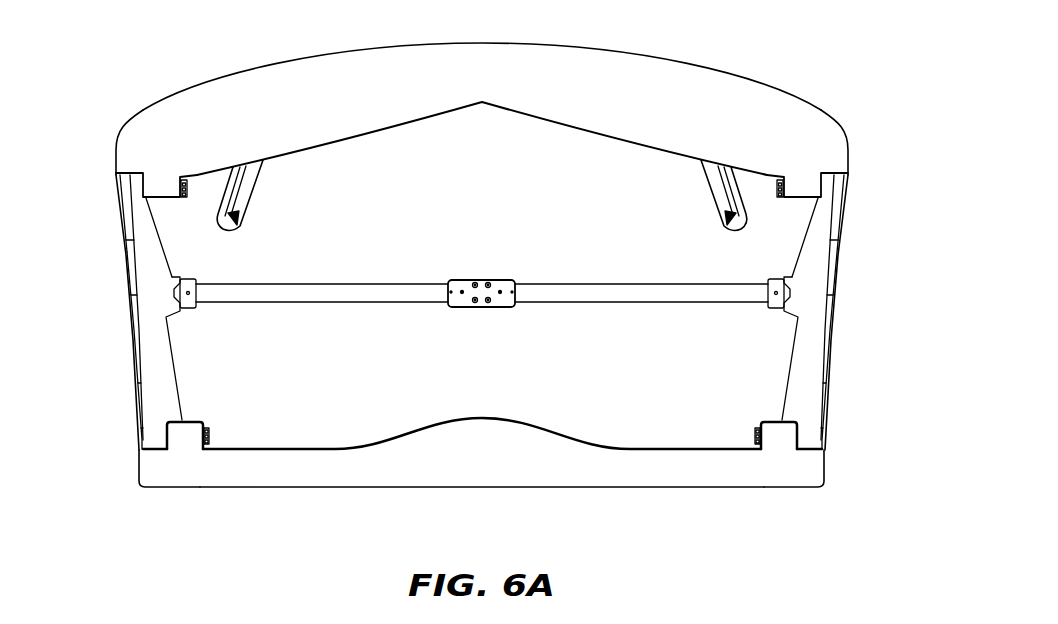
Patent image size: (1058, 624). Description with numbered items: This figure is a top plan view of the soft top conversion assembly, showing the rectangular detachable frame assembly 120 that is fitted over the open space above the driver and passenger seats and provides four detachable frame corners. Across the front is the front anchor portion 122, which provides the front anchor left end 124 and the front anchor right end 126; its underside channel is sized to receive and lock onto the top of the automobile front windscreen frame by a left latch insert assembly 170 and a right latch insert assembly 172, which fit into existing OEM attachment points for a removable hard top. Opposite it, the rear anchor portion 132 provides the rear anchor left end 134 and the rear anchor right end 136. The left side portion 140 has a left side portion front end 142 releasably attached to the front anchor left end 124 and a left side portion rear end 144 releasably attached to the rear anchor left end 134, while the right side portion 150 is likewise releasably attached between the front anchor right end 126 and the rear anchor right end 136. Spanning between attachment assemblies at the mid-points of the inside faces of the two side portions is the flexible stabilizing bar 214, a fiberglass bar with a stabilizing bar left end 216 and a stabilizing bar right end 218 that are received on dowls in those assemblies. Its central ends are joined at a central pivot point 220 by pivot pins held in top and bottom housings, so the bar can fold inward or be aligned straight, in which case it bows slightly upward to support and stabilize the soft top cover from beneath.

The detachable frame assembly 120 is at (786, 73).
The front anchor portion 122 is at (241, 86).
The front anchor left end 124 is at (145, 121).
The front anchor right end 126 is at (820, 150).
The rear anchor portion 132 is at (332, 483).
The rear anchor left end 134 is at (187, 468).
The rear anchor right end 136 is at (780, 477).
The left side portion 140 is at (152, 360).
The left side portion front end 142 is at (133, 186).
The left side portion rear end 144 is at (155, 435).
The right side portion 150 is at (813, 358).
The left latch insert assembly 170 is at (252, 195).
The right latch insert assembly 172 is at (710, 203).
The flexible stabilizing bar 214 is at (682, 302).
The stabilizing bar left end 216 is at (243, 293).
The stabilizing bar right end 218 is at (737, 287).
The central pivot point 220 is at (495, 307).